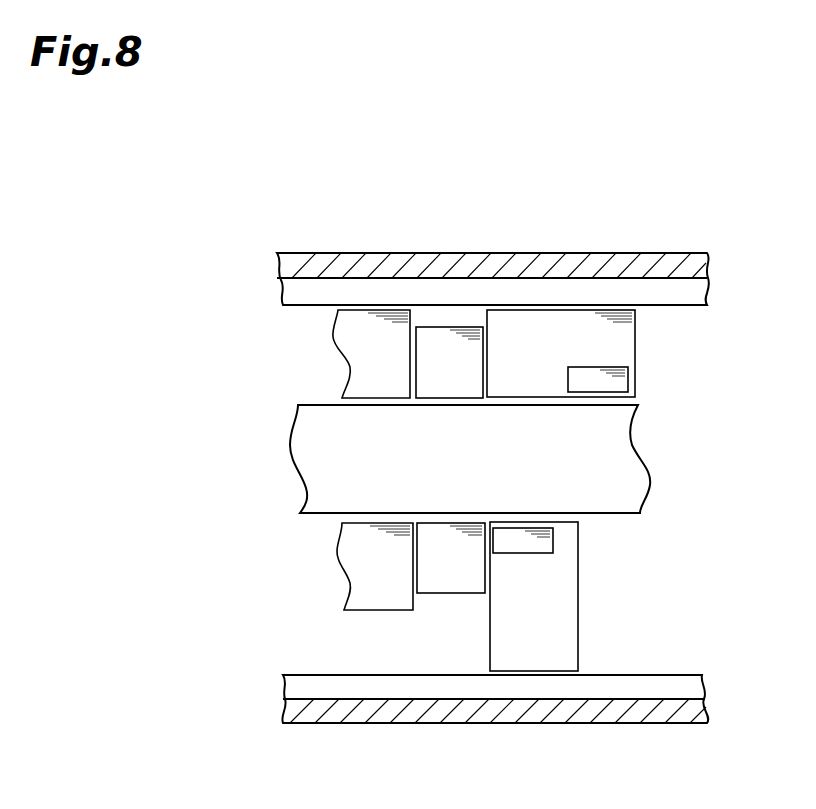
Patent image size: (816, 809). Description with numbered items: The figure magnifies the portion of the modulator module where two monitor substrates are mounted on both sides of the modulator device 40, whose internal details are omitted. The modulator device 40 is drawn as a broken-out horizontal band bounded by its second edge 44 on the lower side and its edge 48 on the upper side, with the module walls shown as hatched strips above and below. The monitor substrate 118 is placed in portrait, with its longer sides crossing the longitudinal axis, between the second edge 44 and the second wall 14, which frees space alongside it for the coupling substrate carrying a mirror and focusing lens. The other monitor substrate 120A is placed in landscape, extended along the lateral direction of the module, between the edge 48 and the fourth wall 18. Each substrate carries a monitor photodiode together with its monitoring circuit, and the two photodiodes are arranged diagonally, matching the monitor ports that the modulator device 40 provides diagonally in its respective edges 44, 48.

The fourth wall 18 is at (336, 268).
The second wall 14 is at (367, 710).
The modulator device 40 is at (312, 463).
The edge 48 is at (309, 405).
The second edge 44 is at (313, 516).
The monitor substrate 120A is at (533, 325).
The monitor substrate 118 is at (551, 636).